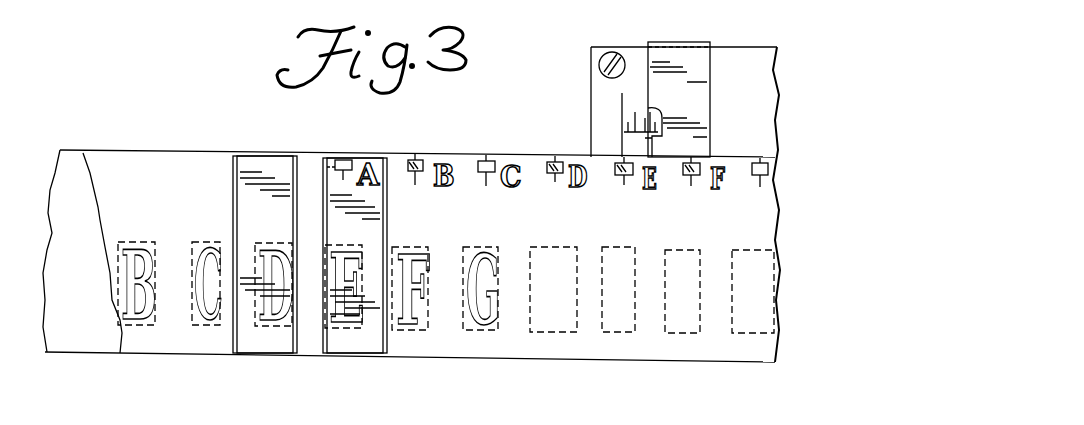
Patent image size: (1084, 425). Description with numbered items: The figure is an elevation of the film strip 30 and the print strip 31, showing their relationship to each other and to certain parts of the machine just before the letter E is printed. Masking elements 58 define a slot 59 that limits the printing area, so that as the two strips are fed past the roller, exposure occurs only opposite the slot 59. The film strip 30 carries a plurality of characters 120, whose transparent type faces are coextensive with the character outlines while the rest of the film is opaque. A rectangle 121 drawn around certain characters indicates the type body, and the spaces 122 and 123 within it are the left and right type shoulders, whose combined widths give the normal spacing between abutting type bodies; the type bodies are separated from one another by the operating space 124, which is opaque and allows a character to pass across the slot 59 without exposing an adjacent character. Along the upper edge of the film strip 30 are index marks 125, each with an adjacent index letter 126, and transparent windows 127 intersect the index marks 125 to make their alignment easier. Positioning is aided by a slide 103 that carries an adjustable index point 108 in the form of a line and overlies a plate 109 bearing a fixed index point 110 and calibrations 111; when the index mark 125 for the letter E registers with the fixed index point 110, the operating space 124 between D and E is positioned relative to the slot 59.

The film strip 30 is at (177, 340).
The print strip 31 is at (97, 340).
The masking elements 58 is at (330, 167).
The slot 59 is at (312, 352).
The slide 103 is at (689, 57).
The index point 108 is at (655, 145).
The plate 109 is at (598, 64).
The fixed index point 110 is at (620, 95).
The calibrations 111 is at (650, 112).
The characters 120 is at (615, 270).
The rectangle 121 is at (619, 247).
The left type shoulder 122 is at (626, 348).
The right type shoulder 123 is at (579, 334).
The operating space 124 is at (651, 260).
The index marks 125 is at (555, 176).
The index letter 126 is at (570, 158).
The transparent windows 127 is at (479, 174).